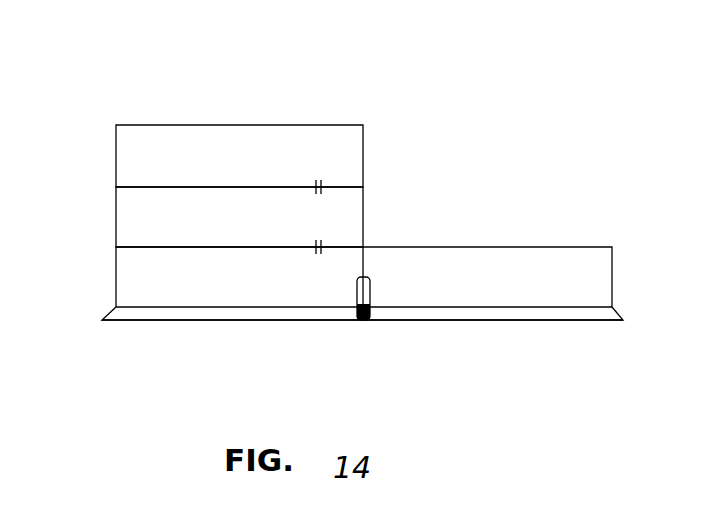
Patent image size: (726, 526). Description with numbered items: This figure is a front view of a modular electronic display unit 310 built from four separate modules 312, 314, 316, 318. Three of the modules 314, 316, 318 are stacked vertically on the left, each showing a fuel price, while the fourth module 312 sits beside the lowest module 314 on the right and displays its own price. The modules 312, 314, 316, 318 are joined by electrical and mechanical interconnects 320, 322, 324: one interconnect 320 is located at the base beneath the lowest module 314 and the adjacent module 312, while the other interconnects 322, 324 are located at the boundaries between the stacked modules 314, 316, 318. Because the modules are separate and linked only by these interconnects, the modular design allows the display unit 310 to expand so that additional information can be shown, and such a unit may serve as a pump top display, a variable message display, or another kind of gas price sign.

The modular electronic display unit 310 is at (270, 72).
The module 312 is at (612, 262).
The module 314 is at (116, 280).
The module 316 is at (116, 218).
The module 318 is at (116, 160).
The electrical and mechanical interconnect 320 is at (365, 320).
The electrical and mechanical interconnect 322 is at (321, 247).
The electrical and mechanical interconnect 324 is at (321, 187).